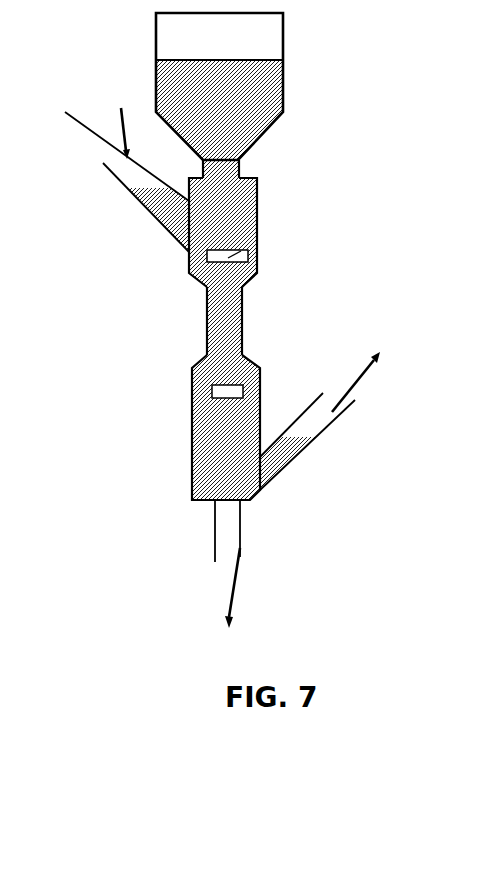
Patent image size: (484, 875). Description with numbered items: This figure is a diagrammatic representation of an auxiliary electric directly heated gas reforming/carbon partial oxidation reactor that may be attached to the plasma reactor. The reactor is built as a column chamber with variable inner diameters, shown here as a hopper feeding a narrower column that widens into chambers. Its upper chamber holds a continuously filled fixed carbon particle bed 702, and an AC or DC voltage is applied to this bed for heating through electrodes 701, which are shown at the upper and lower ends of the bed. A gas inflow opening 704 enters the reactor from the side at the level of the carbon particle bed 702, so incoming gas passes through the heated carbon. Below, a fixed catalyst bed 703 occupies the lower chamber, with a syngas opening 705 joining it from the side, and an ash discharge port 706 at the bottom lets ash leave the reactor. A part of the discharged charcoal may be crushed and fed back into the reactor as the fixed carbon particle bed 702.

The electrodes 701 is at (257, 248).
The fixed carbon particle bed 702 is at (257, 208).
The fixed catalyst bed 703 is at (192, 470).
The gas inflow opening 704 is at (127, 159).
The syngas opening 705 is at (342, 402).
The ash discharge port 706 is at (240, 557).